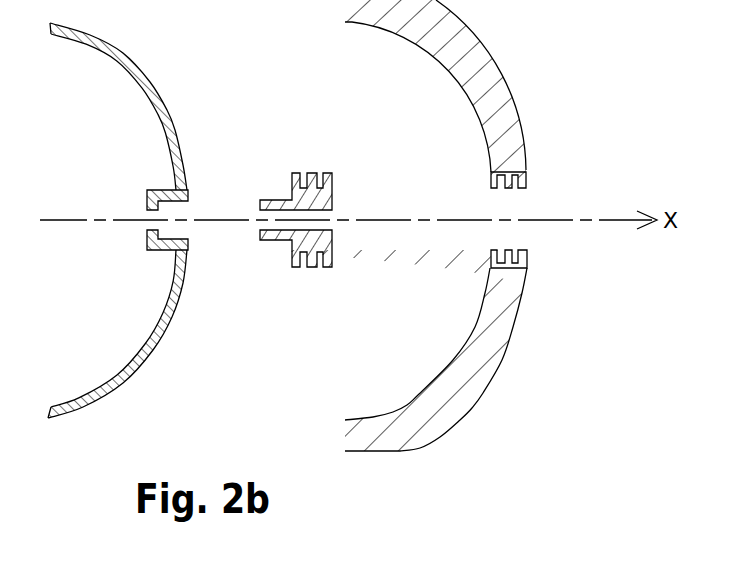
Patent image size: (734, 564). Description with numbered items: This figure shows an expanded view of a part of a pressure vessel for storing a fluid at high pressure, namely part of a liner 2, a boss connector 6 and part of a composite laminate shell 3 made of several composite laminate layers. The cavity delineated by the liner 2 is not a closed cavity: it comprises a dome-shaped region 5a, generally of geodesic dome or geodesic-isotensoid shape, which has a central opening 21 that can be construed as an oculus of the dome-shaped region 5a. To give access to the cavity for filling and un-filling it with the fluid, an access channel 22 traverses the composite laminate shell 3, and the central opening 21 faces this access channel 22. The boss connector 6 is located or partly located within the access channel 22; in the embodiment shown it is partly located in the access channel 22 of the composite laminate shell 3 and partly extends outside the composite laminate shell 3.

The liner 2 is at (150, 80).
The composite laminate shell 3 is at (488, 84).
The dome-shaped region 5a is at (130, 300).
The boss connector 6 is at (313, 175).
The central opening 21 is at (153, 215).
The access channel 22 is at (512, 204).